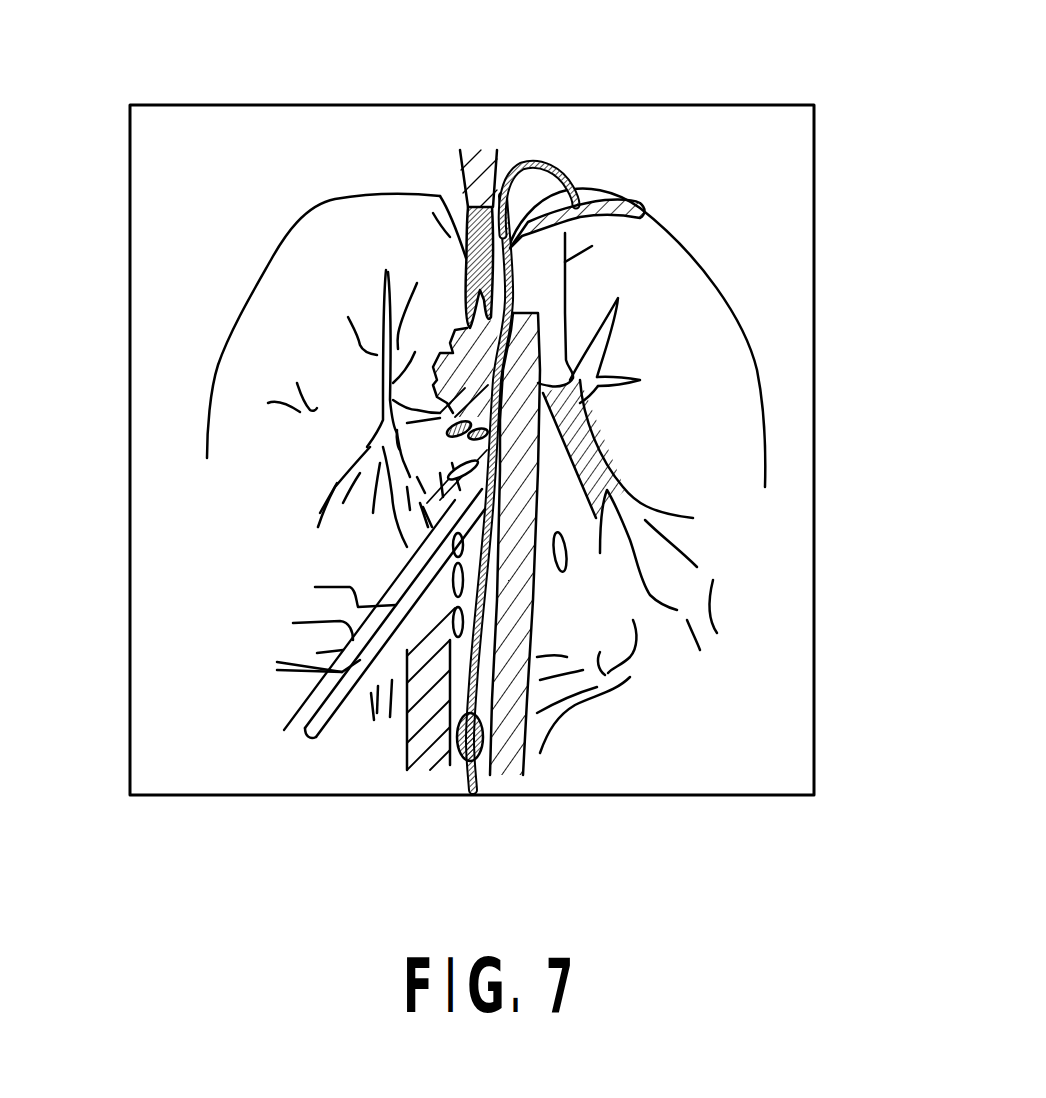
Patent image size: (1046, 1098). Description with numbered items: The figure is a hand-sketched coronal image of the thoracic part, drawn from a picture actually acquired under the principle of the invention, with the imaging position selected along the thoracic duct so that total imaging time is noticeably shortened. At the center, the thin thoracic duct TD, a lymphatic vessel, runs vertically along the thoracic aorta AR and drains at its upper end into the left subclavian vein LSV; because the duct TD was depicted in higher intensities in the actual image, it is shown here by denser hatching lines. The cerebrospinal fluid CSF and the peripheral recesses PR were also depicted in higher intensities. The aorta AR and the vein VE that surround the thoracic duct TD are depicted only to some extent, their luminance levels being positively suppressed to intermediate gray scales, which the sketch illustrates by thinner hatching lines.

The cerebrospinal fluid CSF is at (466, 258).
The left subclavian vein LSV is at (620, 212).
The thoracic duct TD is at (513, 284).
The peripheral recesses PR is at (453, 412).
The thoracic aorta AR is at (520, 460).
The vein VE is at (396, 605).